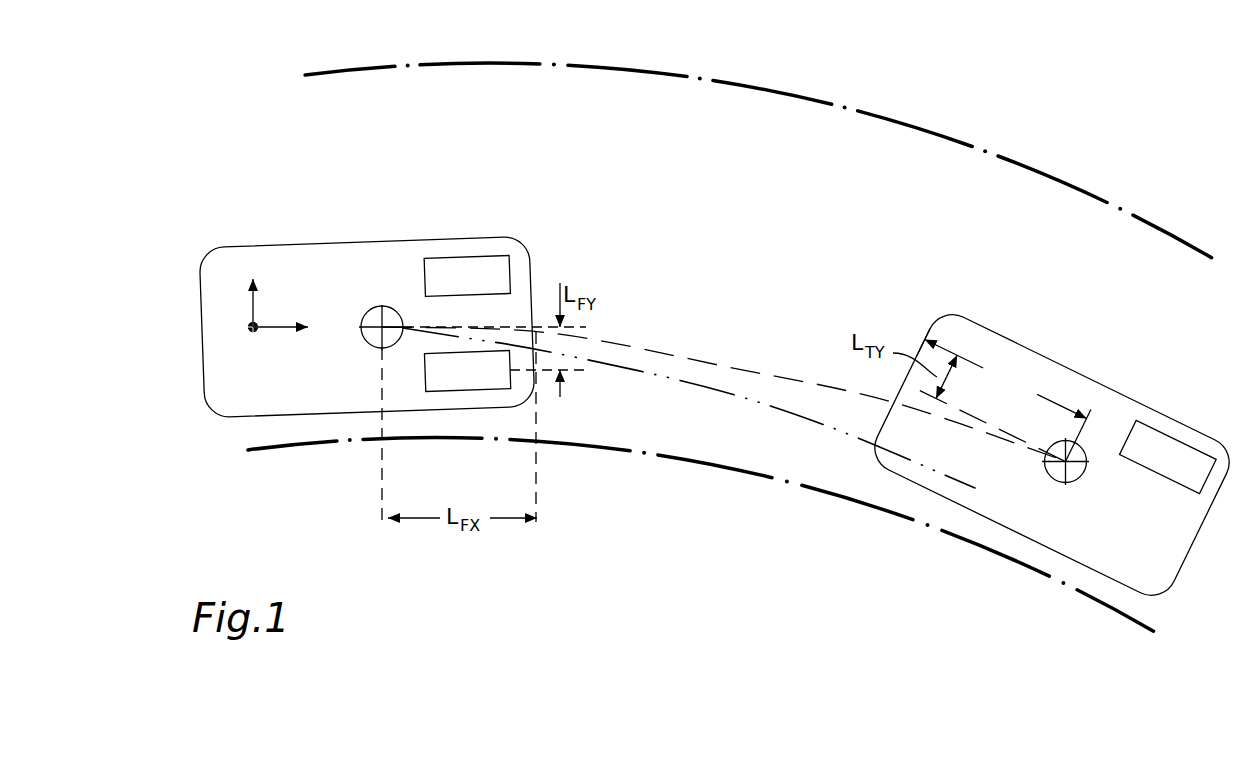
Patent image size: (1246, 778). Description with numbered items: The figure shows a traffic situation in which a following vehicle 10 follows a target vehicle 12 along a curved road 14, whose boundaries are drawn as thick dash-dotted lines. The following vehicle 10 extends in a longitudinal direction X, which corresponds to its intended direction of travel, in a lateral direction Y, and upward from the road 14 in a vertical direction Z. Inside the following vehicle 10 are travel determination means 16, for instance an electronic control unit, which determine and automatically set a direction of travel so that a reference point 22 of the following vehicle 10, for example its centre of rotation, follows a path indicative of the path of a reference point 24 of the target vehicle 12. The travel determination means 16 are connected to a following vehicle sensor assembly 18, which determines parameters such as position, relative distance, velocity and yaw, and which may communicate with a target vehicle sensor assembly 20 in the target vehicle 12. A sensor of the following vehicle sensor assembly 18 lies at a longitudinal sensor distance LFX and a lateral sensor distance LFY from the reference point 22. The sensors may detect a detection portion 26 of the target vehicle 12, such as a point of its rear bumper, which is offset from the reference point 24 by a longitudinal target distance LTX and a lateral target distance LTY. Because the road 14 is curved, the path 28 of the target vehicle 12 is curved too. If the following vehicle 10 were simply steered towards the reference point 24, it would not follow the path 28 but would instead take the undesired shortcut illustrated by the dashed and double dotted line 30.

The following vehicle 10 is at (351, 283).
The target vehicle 12 is at (1051, 409).
The road 14 is at (707, 187).
The travel determination means 16 is at (467, 275).
The following vehicle sensor assembly 18 is at (467, 371).
The target vehicle sensor assembly 20 is at (1168, 456).
The reference point 22 is at (368, 298).
The reference point 24 is at (1097, 478).
The detection portion 26 is at (923, 342).
The path 28 is at (693, 357).
The dashed and double dotted line 30 is at (717, 388).